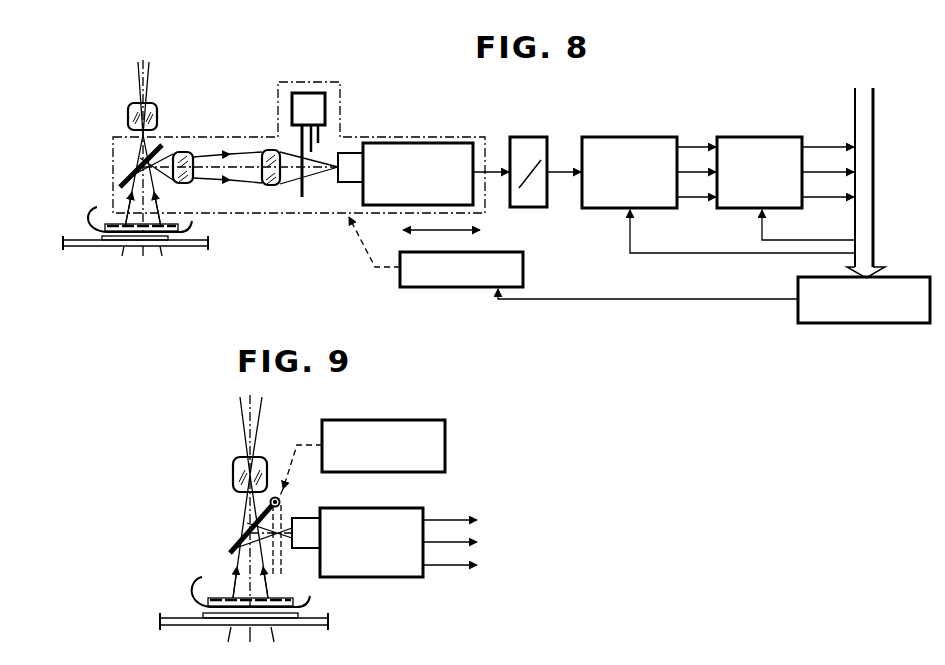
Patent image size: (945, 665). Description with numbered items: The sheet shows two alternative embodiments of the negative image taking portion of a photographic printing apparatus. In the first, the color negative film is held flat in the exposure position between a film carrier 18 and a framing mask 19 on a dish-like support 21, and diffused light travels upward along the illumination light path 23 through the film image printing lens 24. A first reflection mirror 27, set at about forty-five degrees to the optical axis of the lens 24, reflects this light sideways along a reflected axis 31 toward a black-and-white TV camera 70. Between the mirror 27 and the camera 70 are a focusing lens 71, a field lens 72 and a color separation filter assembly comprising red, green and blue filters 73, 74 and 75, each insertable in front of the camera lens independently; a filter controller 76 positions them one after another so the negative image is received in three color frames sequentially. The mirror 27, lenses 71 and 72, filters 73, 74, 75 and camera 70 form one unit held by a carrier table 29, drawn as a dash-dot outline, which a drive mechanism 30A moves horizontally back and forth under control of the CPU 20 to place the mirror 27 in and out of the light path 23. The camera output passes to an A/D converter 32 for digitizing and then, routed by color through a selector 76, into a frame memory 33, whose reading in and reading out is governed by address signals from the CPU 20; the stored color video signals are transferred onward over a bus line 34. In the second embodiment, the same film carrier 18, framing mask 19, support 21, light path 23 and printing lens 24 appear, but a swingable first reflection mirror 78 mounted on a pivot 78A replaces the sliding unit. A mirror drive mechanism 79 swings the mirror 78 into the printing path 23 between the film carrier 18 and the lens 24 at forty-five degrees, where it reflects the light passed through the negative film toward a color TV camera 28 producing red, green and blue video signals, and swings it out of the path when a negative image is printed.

In FIG. 8, the film carrier 18 is at (190, 253).
In FIG. 9, the film carrier 18 is at (318, 617).
In FIG. 8, the framing mask 19 is at (110, 224).
In FIG. 9, the framing mask 19 is at (222, 598).
In FIG. 8, the CPU 20 is at (865, 323).
In FIG. 8, the dish 21 is at (93, 209).
In FIG. 9, the dish 21 is at (200, 578).
In FIG. 8, the illumination light path 23 is at (146, 68).
In FIG. 9, the illumination light path 23 is at (247, 415).
In FIG. 8, the film image printing lens 24 is at (153, 106).
In FIG. 9, the film image printing lens 24 is at (266, 457).
In FIG. 8, the first reflection mirror 27 is at (120, 184).
In FIG. 9, the color TV camera 28 is at (326, 508).
In FIG. 8, the carrier table 29 is at (460, 130).
In FIG. 8, the drive mechanism 30A is at (468, 287).
In FIG. 8, the reflected light optical axis 31 is at (165, 165).
In FIG. 8, the A/D converter 32 is at (528, 137).
In FIG. 8, the frame memory 33 is at (757, 137).
In FIG. 8, the bus line 34 is at (868, 205).
In FIG. 8, the black-and-white TV camera 70 is at (413, 143).
In FIG. 8, the focusing lens 71 is at (190, 185).
In FIG. 8, the field lens 72 is at (265, 187).
In FIG. 8, the red filter 73 is at (297, 193).
In FIG. 8, the green filter 74 is at (313, 138).
In FIG. 8, the blue filter 75 is at (320, 145).
In FIG. 8, the selector 76 is at (308, 98).
In FIG. 9, the swingable first reflection mirror 78 is at (231, 548).
In FIG. 9, the pivot 78A is at (277, 497).
In FIG. 9, the mirror drive mechanism 79 is at (445, 447).